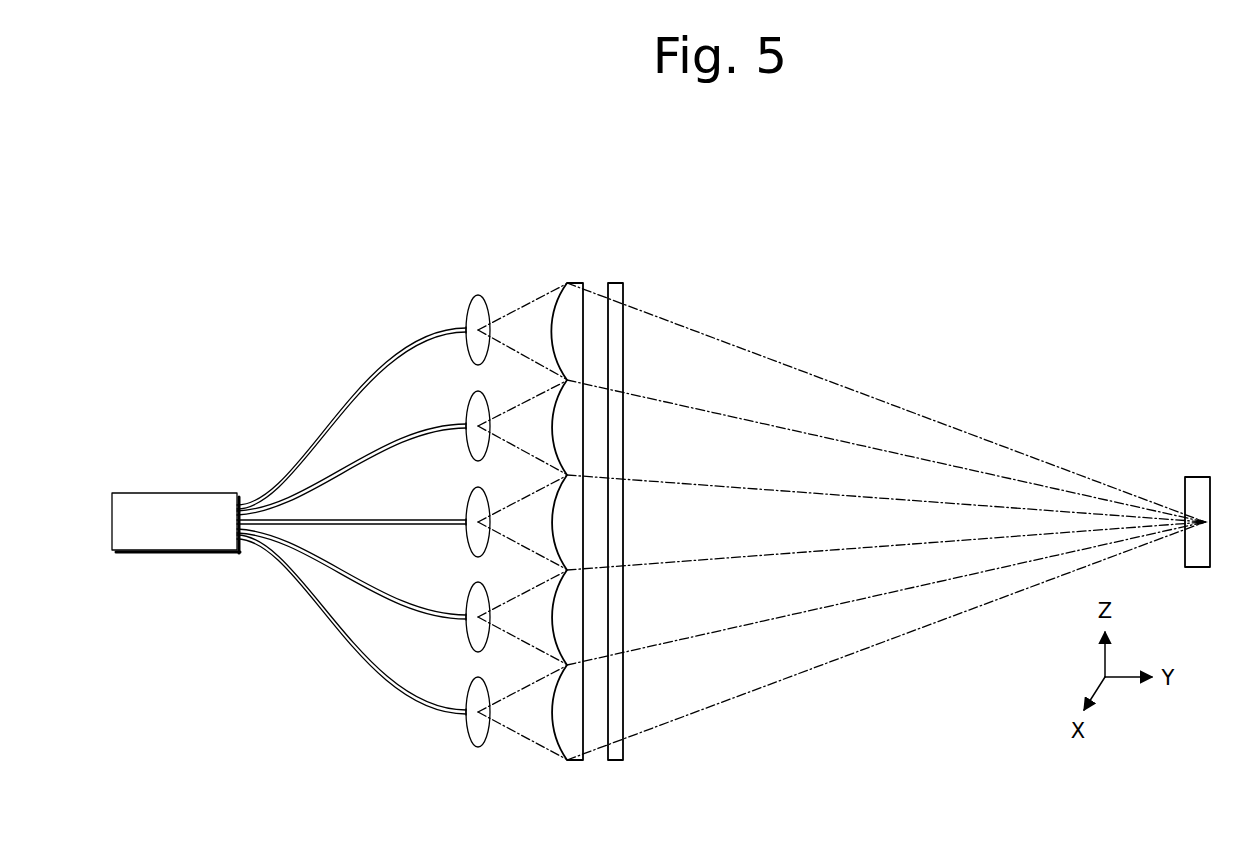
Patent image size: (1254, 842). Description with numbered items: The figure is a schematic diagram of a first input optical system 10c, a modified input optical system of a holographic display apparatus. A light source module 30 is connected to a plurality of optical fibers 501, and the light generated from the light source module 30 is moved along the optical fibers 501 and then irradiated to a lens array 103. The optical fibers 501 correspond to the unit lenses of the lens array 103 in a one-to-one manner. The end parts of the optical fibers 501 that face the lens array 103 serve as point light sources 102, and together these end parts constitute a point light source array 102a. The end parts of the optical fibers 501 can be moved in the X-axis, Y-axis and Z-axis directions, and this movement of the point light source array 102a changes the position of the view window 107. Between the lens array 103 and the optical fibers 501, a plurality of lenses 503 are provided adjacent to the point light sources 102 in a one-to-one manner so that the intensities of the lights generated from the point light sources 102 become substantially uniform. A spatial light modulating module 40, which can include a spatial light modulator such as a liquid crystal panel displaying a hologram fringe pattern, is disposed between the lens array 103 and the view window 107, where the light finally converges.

The first input optical system 10c is at (1000, 227).
The light source module 30 is at (180, 493).
The optical fibers 501 is at (393, 343).
The point light source array 102a is at (441, 309).
The point light sources 102 is at (465, 343).
The lenses 503 is at (478, 296).
The lens array 103 is at (573, 283).
The spatial light modulating module 40 is at (615, 283).
The view window 107 is at (1197, 477).